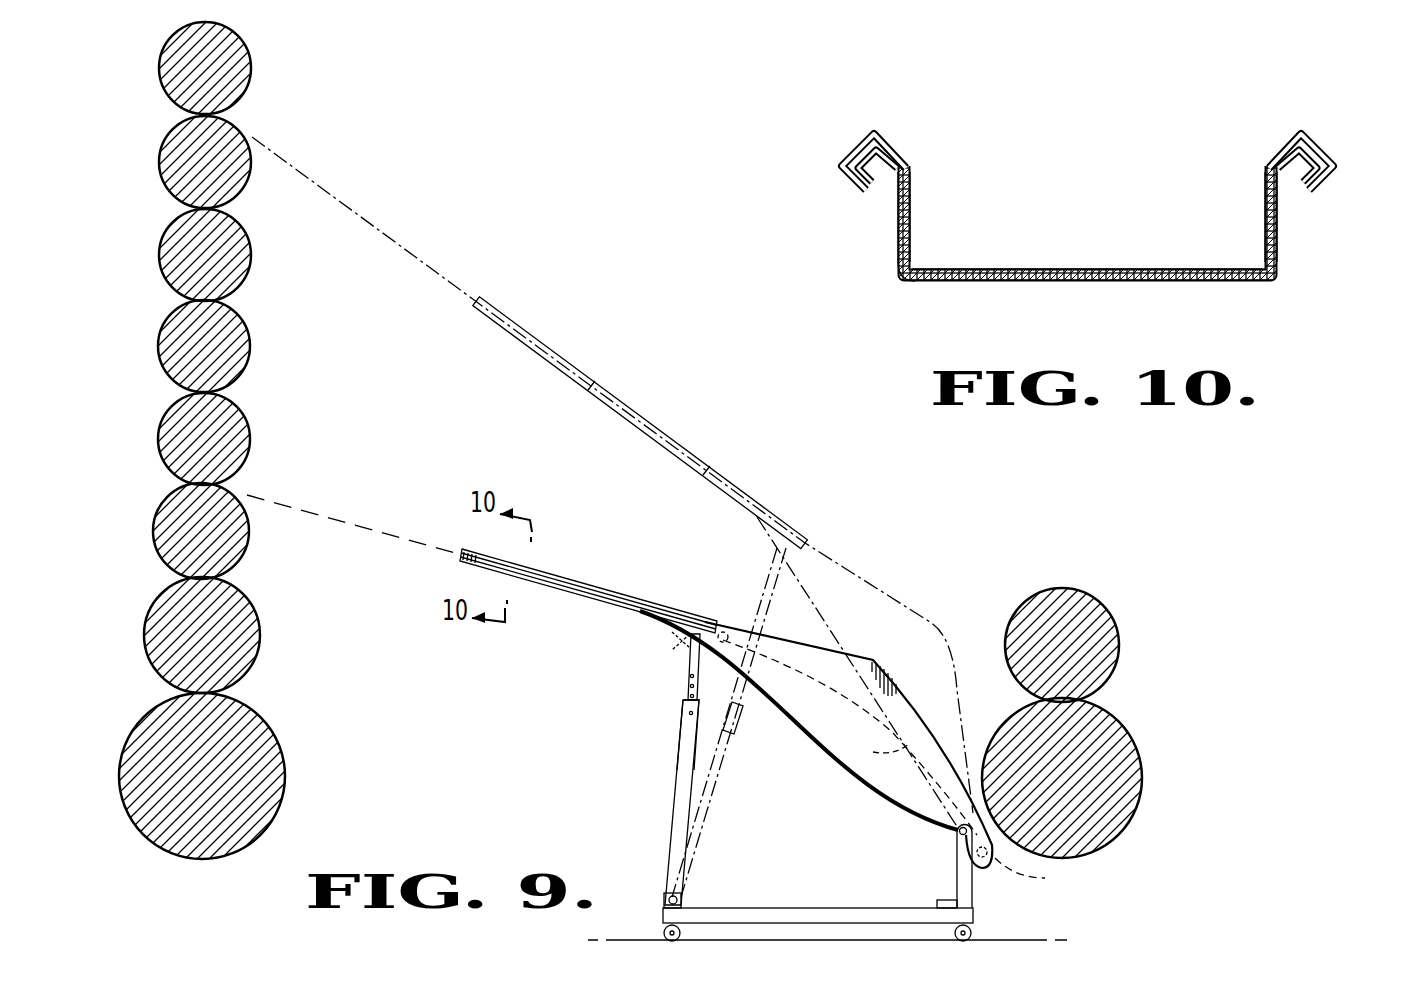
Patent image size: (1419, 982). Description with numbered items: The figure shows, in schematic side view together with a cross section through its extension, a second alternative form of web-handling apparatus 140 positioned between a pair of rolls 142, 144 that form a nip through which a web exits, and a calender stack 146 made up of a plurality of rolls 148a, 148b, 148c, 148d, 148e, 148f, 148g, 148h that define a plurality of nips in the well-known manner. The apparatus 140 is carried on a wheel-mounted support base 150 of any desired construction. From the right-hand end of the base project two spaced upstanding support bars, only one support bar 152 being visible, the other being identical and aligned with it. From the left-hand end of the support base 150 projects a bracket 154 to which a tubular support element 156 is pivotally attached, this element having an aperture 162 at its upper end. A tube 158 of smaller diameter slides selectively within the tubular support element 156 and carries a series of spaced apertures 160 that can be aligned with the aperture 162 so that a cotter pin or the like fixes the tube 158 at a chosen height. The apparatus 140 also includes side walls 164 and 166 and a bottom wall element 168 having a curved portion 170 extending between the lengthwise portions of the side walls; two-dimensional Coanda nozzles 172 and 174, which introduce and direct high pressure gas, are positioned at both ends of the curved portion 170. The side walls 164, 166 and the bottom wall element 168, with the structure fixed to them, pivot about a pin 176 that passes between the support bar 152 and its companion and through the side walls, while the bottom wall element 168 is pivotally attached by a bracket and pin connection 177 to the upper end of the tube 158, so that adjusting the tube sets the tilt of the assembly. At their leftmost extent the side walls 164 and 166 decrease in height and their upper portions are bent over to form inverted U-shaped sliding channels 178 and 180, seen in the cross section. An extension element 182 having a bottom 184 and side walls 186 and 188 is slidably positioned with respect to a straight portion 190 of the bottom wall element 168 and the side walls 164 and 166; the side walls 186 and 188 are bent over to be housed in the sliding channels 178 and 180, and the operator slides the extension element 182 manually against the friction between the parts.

In FIG. 9, the apparatus 140 is at (857, 780).
In FIG. 9, the roll 142 is at (1112, 628).
In FIG. 9, the roll 144 is at (1140, 770).
In FIG. 9, the calender stack 146 is at (148, 172).
In FIG. 9, the roll 148a is at (248, 72).
In FIG. 9, the roll 148b is at (250, 180).
In FIG. 9, the roll 148c is at (249, 268).
In FIG. 9, the roll 148d is at (249, 357).
In FIG. 9, the roll 148e is at (249, 443).
In FIG. 9, the roll 148f is at (248, 552).
In FIG. 9, the roll 148g is at (259, 648).
In FIG. 9, the roll 148h is at (283, 782).
In FIG. 9, the wheel-mounted support base 150 is at (811, 907).
In FIG. 9, the support bar 152 is at (968, 894).
In FIG. 9, the bracket 154 is at (677, 900).
In FIG. 9, the tubular support element 156 is at (677, 800).
In FIG. 9, the tube 158 is at (688, 670).
In FIG. 9, the apertures 160 is at (685, 703).
In FIG. 9, the aperture 162 is at (692, 713).
In FIG. 9, the side wall 164 is at (887, 669).
In FIG. 10, the side wall 164 is at (1265, 200).
In FIG. 10, the side wall 166 is at (910, 215).
In FIG. 9, the bottom wall element 168 is at (836, 684).
In FIG. 9, the curved portion 170 is at (888, 752).
In FIG. 9, the Coanda nozzle 172 is at (729, 630).
In FIG. 9, the Coanda nozzle 174 is at (1040, 878).
In FIG. 9, the pin 176 is at (958, 833).
In FIG. 9, the bracket and pin connection 177 is at (683, 648).
In FIG. 10, the sliding channel 178 is at (862, 136).
In FIG. 10, the sliding channel 180 is at (1314, 144).
In FIG. 10, the extension element 182 is at (1048, 292).
In FIG. 10, the bottom 184 is at (938, 282).
In FIG. 10, the side wall 186 is at (898, 232).
In FIG. 10, the side wall 188 is at (1282, 250).
In FIG. 9, the straight portion 190 is at (598, 600).
In FIG. 10, the straight portion 190 is at (1020, 267).